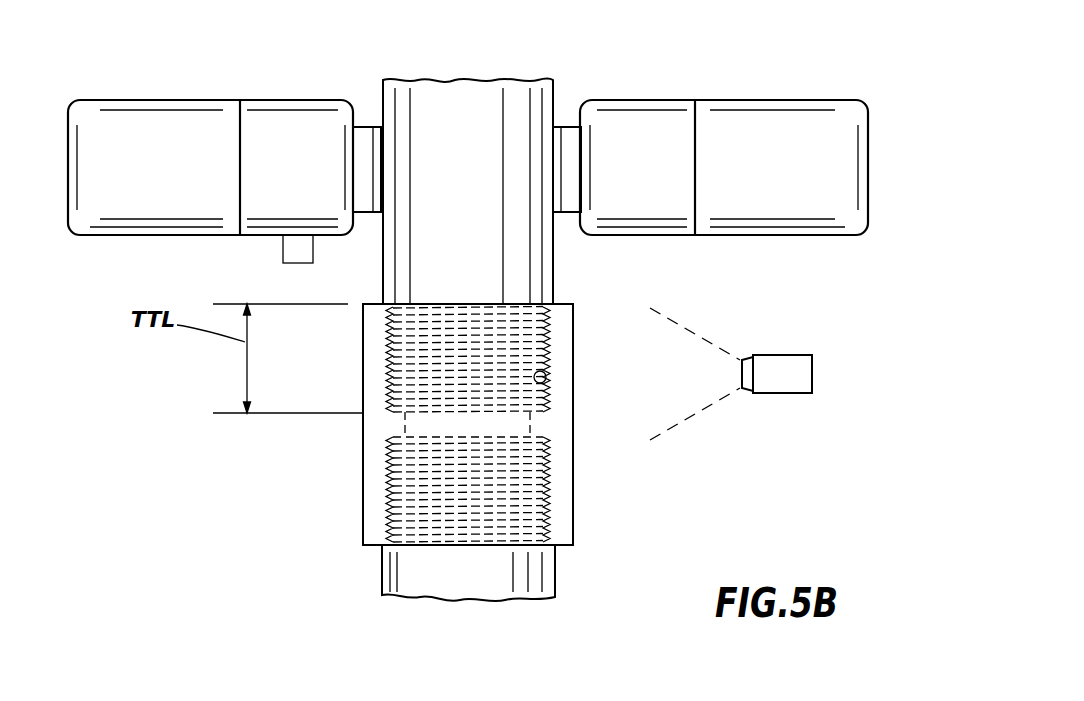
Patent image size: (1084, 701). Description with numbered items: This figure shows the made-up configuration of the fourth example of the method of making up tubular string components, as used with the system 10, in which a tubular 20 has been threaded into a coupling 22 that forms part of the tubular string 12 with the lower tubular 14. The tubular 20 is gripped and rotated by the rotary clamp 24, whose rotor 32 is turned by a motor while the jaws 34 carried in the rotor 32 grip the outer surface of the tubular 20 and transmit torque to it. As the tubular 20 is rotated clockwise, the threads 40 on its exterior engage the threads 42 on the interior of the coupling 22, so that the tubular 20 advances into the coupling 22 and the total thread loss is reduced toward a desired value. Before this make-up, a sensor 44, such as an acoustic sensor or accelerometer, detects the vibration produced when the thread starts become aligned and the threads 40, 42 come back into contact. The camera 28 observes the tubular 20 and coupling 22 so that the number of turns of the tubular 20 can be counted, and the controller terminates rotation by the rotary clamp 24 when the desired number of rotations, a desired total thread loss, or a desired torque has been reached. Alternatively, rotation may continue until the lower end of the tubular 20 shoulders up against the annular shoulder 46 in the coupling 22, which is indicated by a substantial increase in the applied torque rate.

The system 10 is at (876, 68).
The tubular string 12 is at (582, 525).
The tubular 14 is at (382, 567).
The tubular 20 is at (555, 87).
The coupling 22 is at (363, 475).
The rotary clamp 24 is at (110, 100).
The camera 28 is at (790, 395).
The rotor 32 is at (307, 100).
The jaws 34 is at (370, 127).
The threads 40 is at (388, 366).
The threads 42 is at (547, 370).
The sensor 44 is at (282, 247).
The annular shoulder 46 is at (483, 414).